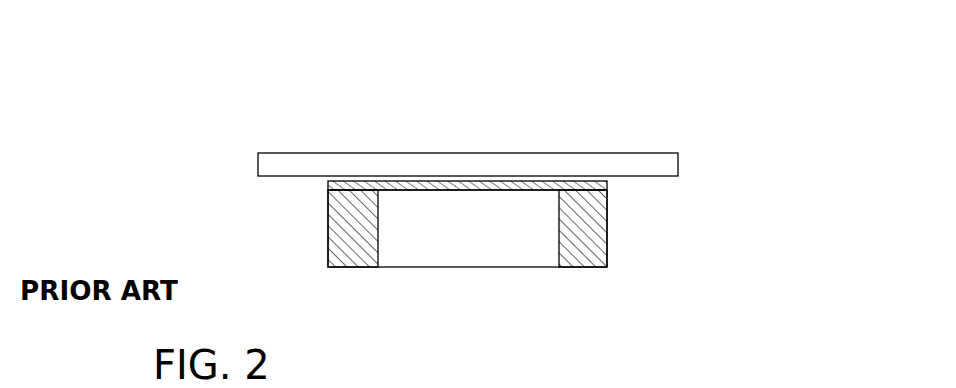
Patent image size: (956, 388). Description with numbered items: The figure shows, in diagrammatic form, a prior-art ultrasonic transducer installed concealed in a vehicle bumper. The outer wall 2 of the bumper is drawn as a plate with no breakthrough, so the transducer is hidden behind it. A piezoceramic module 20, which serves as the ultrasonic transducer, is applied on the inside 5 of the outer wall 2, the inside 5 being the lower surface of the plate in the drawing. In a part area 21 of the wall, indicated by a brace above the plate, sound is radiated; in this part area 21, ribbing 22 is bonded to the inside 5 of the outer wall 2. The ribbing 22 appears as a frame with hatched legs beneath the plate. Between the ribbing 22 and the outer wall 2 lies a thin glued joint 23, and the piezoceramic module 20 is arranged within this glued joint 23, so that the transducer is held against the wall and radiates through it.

The outer wall 2 is at (656, 159).
The inside 5 is at (268, 190).
The piezoceramic module 20 is at (412, 177).
The part area 21 is at (560, 124).
The ribbing 22 is at (587, 244).
The glued joint 23 is at (597, 177).